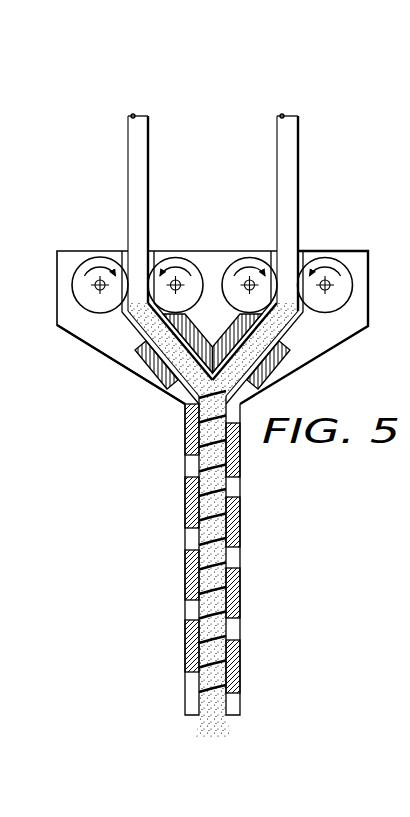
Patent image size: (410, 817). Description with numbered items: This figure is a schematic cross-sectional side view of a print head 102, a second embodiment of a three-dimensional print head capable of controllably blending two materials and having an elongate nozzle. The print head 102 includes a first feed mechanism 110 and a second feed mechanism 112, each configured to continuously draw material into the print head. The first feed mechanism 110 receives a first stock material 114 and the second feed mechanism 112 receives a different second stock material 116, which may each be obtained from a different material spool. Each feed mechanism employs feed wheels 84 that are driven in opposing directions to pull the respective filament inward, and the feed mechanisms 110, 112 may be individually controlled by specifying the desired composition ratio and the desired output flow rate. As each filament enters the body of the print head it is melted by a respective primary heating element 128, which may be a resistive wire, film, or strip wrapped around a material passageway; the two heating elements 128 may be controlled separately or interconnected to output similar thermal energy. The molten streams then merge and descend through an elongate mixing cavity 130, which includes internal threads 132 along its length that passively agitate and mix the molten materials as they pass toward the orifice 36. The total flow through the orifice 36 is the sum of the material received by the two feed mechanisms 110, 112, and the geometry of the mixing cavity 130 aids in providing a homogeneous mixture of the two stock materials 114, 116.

The print head 102 is at (120, 51).
The first feed mechanism 110 is at (116, 240).
The second feed mechanism 112 is at (314, 227).
The first stock material 114 is at (127, 170).
The second stock material 116 is at (299, 170).
The feed wheels 84 is at (72, 283).
The primary heating element 128 is at (160, 368).
The mixing cavity 130 is at (212, 580).
The internal threads 132 is at (210, 629).
The orifice 36 is at (203, 712).